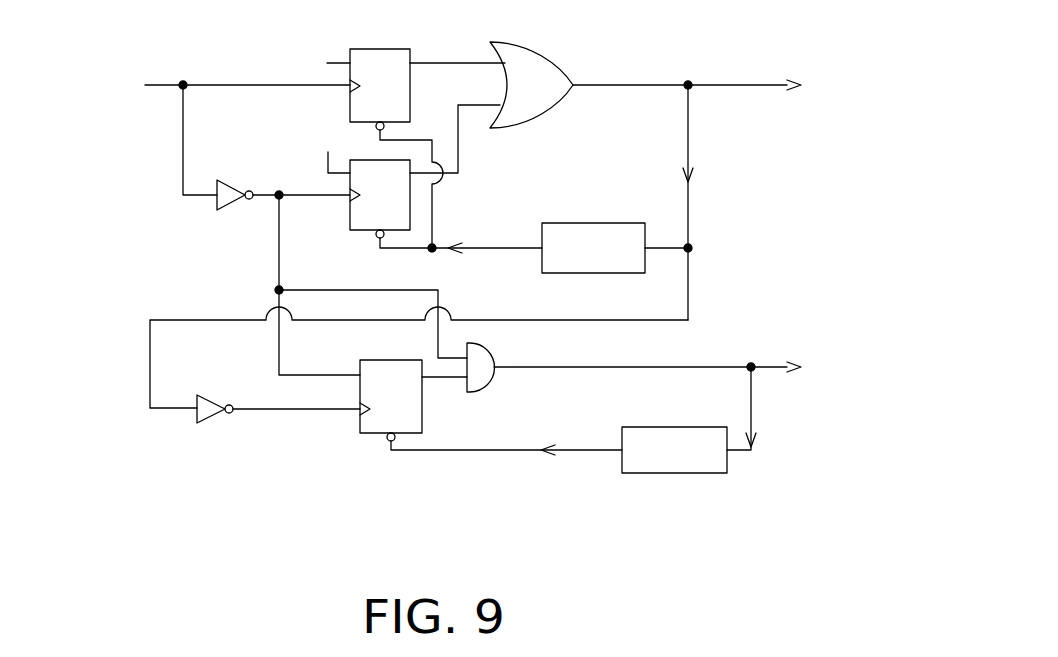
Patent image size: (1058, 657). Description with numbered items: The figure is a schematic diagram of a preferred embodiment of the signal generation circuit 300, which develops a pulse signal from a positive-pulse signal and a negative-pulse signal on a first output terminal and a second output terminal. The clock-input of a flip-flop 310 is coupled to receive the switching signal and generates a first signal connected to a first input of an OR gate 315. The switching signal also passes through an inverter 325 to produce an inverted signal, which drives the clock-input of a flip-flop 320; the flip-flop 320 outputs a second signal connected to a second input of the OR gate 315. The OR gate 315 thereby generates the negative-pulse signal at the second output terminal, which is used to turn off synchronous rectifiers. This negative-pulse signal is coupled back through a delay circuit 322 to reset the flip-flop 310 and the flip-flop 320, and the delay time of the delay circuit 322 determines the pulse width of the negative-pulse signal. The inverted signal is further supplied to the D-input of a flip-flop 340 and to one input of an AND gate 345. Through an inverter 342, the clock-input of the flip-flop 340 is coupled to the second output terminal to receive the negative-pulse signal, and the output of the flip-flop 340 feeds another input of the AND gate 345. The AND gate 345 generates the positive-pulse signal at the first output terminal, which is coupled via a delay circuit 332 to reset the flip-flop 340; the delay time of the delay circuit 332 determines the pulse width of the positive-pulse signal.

The signal generation circuit 300 is at (830, 36).
The flip-flop 310 is at (380, 60).
The OR gate 315 is at (547, 98).
The flip-flop 320 is at (373, 167).
The delay circuit 322 is at (593, 223).
The inverter 325 is at (227, 180).
The delay circuit 332 is at (703, 470).
The flip-flop 340 is at (410, 402).
The inverter 342 is at (202, 417).
The AND gate 345 is at (485, 377).